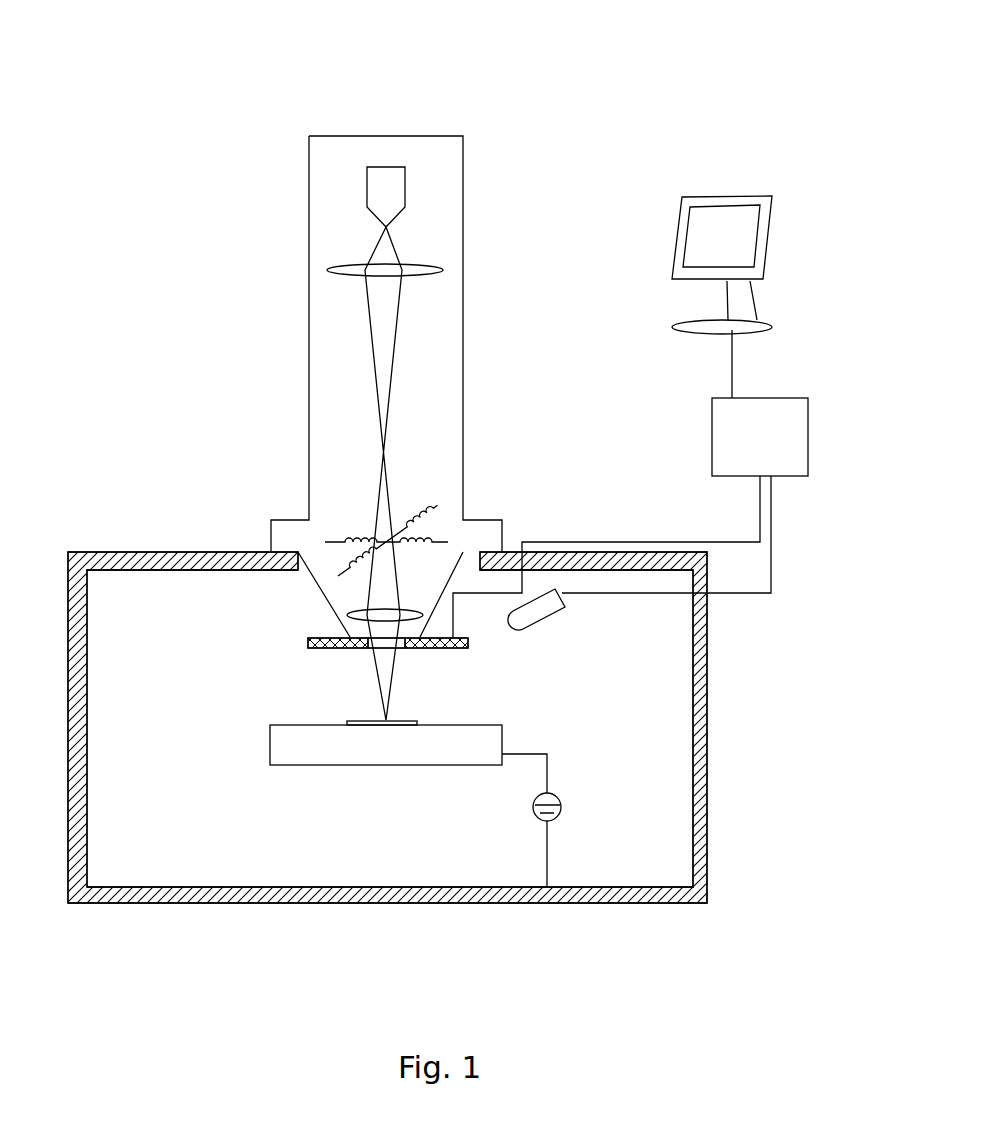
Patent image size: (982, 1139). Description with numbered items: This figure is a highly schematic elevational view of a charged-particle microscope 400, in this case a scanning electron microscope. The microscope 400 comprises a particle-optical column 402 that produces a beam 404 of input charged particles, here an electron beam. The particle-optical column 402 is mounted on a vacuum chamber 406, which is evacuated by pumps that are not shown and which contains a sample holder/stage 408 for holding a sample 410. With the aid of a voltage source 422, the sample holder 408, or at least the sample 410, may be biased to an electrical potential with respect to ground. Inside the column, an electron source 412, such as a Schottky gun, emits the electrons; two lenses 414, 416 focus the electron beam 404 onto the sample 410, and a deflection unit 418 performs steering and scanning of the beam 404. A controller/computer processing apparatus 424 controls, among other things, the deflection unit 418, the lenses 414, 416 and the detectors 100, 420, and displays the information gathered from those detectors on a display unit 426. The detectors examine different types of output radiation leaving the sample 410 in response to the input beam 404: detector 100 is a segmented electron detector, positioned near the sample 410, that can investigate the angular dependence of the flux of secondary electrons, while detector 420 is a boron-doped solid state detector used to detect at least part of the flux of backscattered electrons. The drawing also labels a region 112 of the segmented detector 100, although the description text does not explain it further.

The charged-particle microscope 400 is at (168, 84).
The particle-optical column 402 is at (258, 235).
The beam 404 is at (385, 693).
The vacuum chamber 406 is at (140, 567).
The sample holder/stage 408 is at (288, 750).
The sample 410 is at (417, 721).
The electron source 412 is at (386, 187).
The lens 414 is at (428, 264).
The lens 416 is at (414, 610).
The deflection unit 418 is at (418, 520).
The boron-doped solid state detector 420 is at (550, 607).
The voltage source 422 is at (533, 812).
The controller/computer processing apparatus 424 is at (732, 410).
The display unit 426 is at (732, 245).
The segmented electron detector 100 is at (308, 617).
The aperture membrane 112 is at (378, 659).